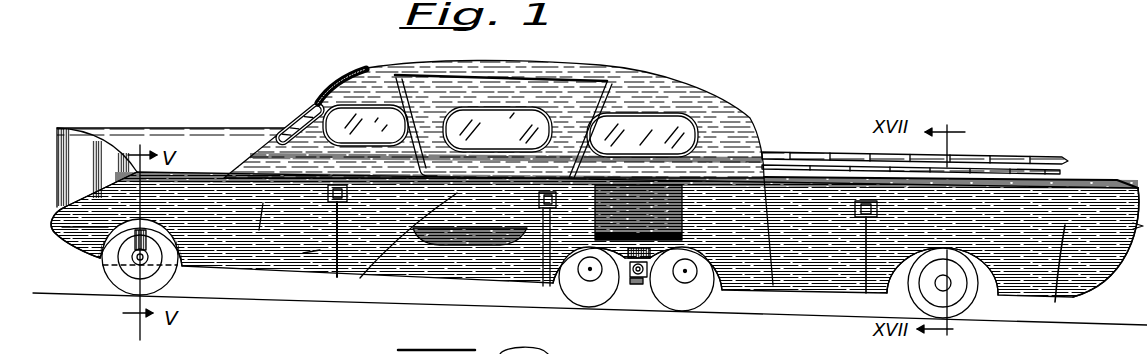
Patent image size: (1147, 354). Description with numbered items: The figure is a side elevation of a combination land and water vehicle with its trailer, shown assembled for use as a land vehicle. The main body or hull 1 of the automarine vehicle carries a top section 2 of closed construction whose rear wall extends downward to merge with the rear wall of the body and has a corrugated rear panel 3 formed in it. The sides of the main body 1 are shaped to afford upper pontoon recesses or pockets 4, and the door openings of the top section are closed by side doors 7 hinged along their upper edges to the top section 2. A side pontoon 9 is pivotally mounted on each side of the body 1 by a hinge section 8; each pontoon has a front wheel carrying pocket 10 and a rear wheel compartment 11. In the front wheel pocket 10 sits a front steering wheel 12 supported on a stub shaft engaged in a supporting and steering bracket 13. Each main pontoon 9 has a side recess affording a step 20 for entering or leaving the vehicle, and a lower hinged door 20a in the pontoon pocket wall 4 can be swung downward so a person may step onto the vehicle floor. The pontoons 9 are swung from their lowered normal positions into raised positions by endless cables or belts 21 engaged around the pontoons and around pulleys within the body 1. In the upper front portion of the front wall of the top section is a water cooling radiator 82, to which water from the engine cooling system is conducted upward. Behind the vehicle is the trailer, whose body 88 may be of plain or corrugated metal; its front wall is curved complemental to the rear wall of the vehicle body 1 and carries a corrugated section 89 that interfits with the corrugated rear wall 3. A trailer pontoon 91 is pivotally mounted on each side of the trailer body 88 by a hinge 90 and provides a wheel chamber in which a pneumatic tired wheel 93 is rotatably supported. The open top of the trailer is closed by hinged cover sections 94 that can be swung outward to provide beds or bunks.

The main body or hull 1 is at (89, 192).
The top section 2 is at (672, 83).
The corrugated rear panel 3 is at (752, 178).
The upper pontoon recesses or pockets 4 is at (203, 185).
The side doors 7 is at (576, 92).
The hinge section 8 is at (263, 203).
The side pontoon 9 is at (303, 253).
The front wheel carrying pocket 10 is at (88, 253).
The rear wheel compartment 11 is at (540, 322).
The front steering wheel 12 is at (158, 286).
The supporting and steering bracket 13 is at (143, 238).
The step 20 is at (467, 240).
The lower hinged door 20a is at (397, 249).
The endless cables or belts 21 is at (513, 288).
The water cooling radiator 82 is at (345, 78).
The trailer body 88 is at (1081, 210).
The corrugated section 89 is at (765, 200).
The hinge 90 is at (1058, 275).
The trailer pontoon 91 is at (1097, 277).
The pneumatic tired wheel 93 is at (965, 298).
The hinged cover sections 94 is at (1018, 151).